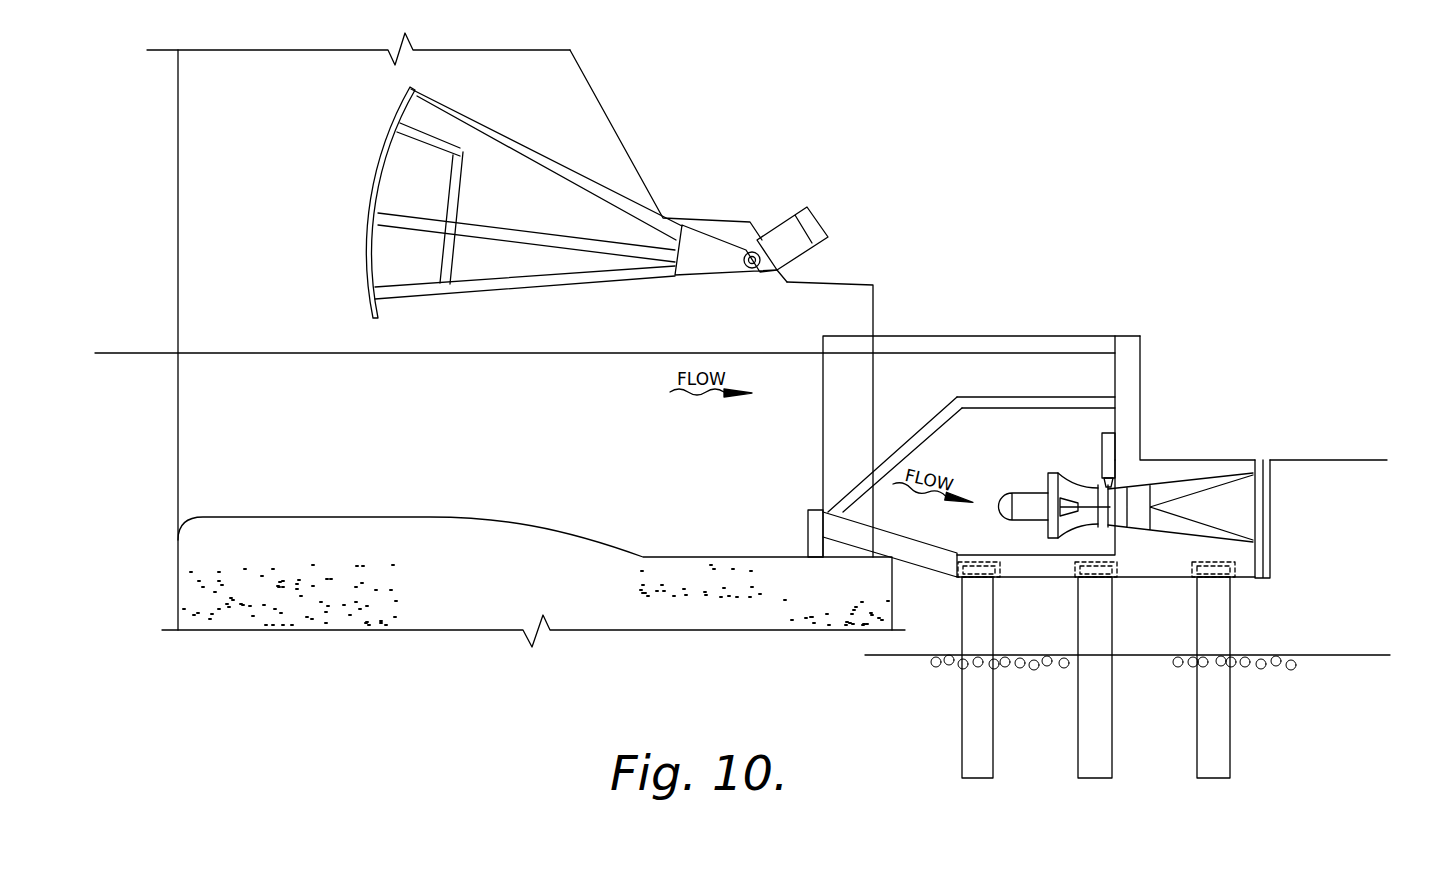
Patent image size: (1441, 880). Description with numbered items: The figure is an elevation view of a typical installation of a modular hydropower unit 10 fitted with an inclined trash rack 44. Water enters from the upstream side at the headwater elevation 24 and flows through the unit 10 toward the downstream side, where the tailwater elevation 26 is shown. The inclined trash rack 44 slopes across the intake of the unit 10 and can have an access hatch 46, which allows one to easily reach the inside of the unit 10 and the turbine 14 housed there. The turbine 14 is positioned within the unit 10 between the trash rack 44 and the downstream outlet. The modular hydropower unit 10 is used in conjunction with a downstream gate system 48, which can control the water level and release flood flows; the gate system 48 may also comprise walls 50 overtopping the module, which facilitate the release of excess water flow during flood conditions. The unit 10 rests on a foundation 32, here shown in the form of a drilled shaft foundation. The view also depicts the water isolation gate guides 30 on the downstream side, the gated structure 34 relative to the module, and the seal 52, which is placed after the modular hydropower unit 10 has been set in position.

The modular hydropower unit 10 is at (1166, 308).
The turbine 14 is at (1005, 492).
The headwater elevation 24 is at (218, 352).
The tailwater elevation 26 is at (1350, 460).
The water isolation gate guides 30 is at (1270, 537).
The foundation 32 is at (975, 770).
The gated structure 34 is at (857, 282).
The inclined trash rack 44 is at (940, 428).
The access hatch 46 is at (1027, 398).
The downstream gate system 48 is at (1133, 385).
The walls 50 is at (937, 342).
The seal 52 is at (810, 528).